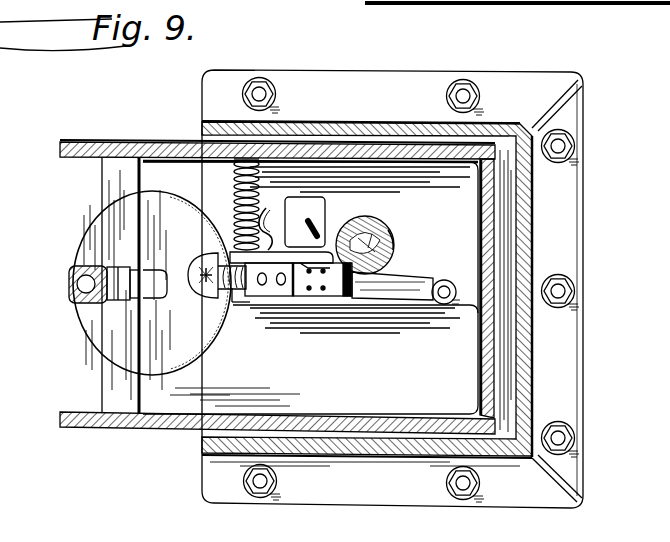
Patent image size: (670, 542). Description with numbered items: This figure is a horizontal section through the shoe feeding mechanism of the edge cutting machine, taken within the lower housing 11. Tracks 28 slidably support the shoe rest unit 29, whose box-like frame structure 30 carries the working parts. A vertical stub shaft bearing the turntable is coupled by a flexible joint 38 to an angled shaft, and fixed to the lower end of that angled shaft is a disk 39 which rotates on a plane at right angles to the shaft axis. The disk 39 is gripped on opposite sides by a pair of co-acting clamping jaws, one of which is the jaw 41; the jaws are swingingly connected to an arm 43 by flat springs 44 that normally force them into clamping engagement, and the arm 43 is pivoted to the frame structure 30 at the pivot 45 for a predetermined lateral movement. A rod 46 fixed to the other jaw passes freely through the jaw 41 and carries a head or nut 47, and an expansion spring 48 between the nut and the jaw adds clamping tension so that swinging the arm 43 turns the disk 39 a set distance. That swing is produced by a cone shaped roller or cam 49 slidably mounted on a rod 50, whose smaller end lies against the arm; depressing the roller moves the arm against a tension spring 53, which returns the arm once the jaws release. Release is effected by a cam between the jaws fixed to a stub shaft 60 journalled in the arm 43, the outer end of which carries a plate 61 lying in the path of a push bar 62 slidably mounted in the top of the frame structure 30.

The lower housing 11 is at (537, 245).
The tracks 28 is at (513, 129).
The shoe rest unit 29 is at (310, 288).
The box-like frame structure 30 is at (194, 143).
The flexible joint 38 is at (76, 274).
The disk 39 is at (90, 321).
The clamping jaw 41 is at (248, 300).
The arm 43 is at (388, 279).
The flat springs 44 is at (313, 299).
The pivot 45 is at (447, 279).
The rod 46 is at (200, 262).
The head or nut 47 is at (201, 299).
The expansion spring 48 is at (234, 303).
The cone shaped roller or cam 49 is at (391, 232).
The rod 50 is at (373, 224).
The tension spring 53 is at (237, 192).
The stub shaft 60 is at (269, 222).
The plate 61 is at (305, 222).
The push bar 62 is at (322, 224).